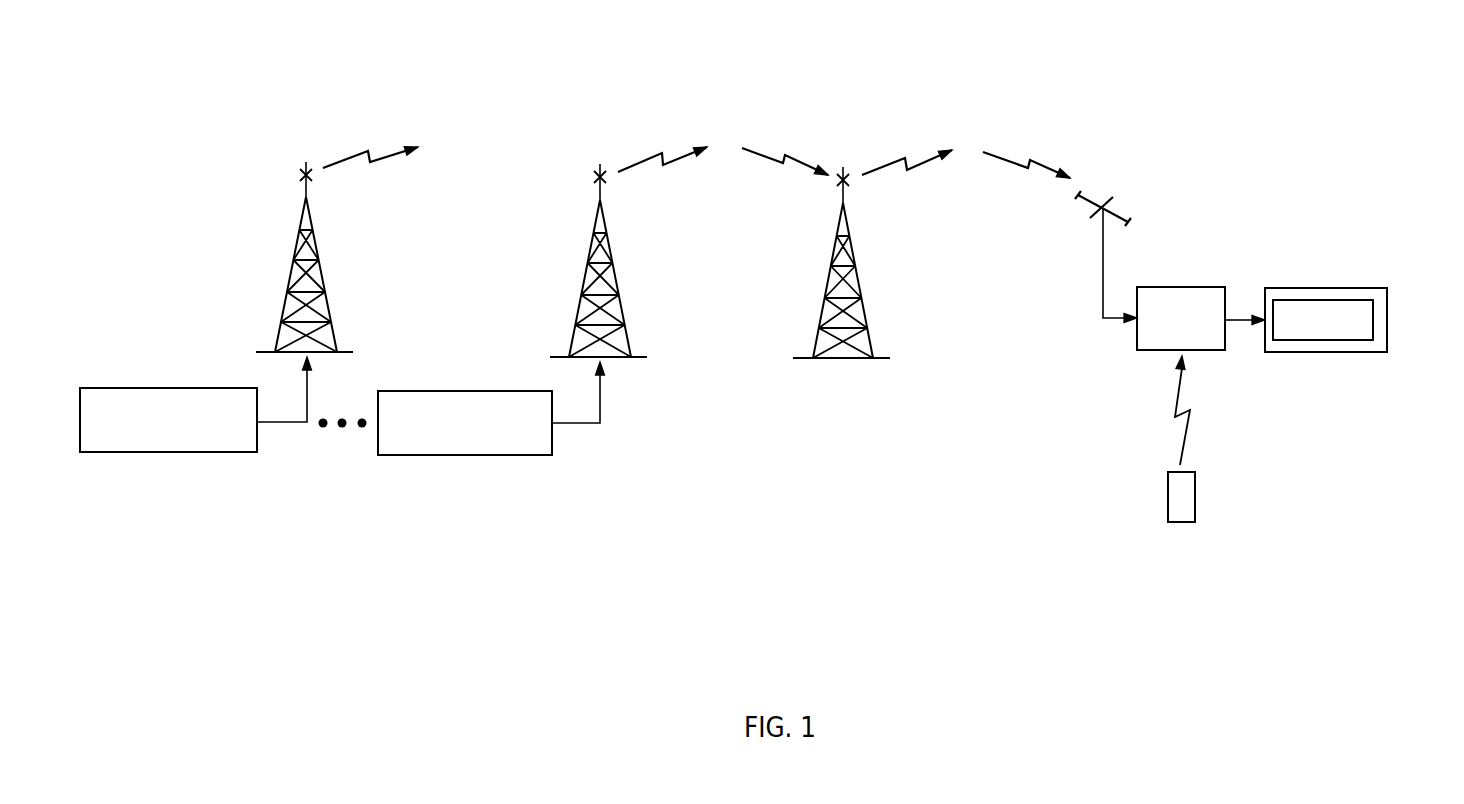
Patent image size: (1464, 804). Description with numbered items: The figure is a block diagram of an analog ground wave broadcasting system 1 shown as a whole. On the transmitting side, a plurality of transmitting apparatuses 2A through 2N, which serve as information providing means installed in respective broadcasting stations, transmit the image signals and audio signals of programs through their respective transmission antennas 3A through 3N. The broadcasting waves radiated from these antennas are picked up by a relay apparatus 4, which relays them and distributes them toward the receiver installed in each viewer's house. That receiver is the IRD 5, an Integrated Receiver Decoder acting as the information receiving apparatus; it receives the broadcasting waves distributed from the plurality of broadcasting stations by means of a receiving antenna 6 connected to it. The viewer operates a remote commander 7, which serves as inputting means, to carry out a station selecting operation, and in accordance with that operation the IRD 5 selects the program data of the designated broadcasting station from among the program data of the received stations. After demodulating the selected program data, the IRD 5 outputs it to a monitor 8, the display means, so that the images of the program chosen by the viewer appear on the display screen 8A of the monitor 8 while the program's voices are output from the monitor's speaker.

The analog ground wave broadcasting system 1 is at (1259, 125).
The transmitting apparatus 2A is at (185, 452).
The transmitting apparatus 2N is at (478, 455).
The transmission antenna 3A is at (322, 272).
The transmission antenna 3N is at (616, 274).
The relay apparatus 4 is at (859, 276).
The IRD (Integrated Receiver Decoder) 5 is at (1192, 287).
The receiving antenna 6 is at (1132, 200).
The remote commander 7 is at (1180, 522).
The monitor 8 is at (1351, 301).
The display screen 8A is at (1387, 320).